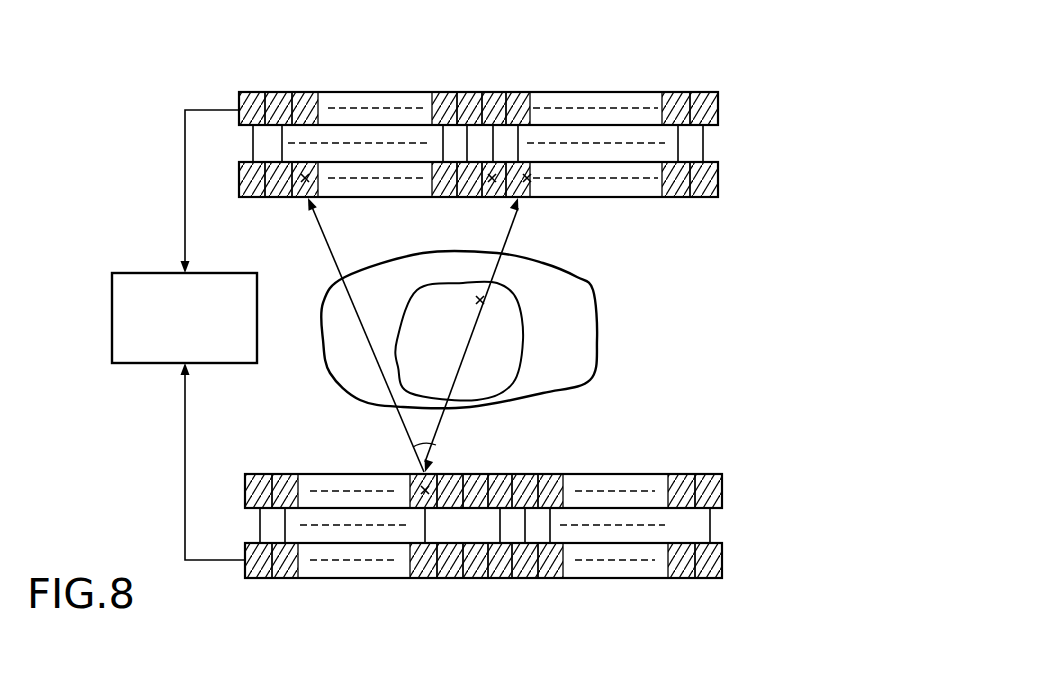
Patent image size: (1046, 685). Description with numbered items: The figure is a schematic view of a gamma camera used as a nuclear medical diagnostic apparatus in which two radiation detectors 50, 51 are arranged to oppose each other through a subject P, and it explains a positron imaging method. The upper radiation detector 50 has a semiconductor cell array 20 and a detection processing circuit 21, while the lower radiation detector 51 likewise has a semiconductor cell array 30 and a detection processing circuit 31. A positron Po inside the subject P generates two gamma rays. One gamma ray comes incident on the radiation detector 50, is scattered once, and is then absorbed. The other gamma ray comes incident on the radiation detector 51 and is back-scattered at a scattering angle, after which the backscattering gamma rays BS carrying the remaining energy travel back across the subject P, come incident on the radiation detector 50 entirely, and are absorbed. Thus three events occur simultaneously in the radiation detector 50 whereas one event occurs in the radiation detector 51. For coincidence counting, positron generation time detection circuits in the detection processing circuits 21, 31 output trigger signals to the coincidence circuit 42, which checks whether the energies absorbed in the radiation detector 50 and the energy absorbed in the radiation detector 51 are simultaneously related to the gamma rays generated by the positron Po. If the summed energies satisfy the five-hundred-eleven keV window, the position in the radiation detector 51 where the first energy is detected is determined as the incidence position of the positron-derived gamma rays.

The radiation detector 50 is at (502, 102).
The radiation detector 51 is at (508, 561).
The detection processing circuit 21 is at (720, 105).
The semiconductor cell array 20 is at (722, 173).
The semiconductor cell array 30 is at (724, 487).
The detection processing circuit 31 is at (724, 560).
The coincidence circuit 42 is at (137, 273).
The subject P is at (573, 281).
The positron Po is at (482, 302).
The backscattering gamma rays BS is at (325, 243).